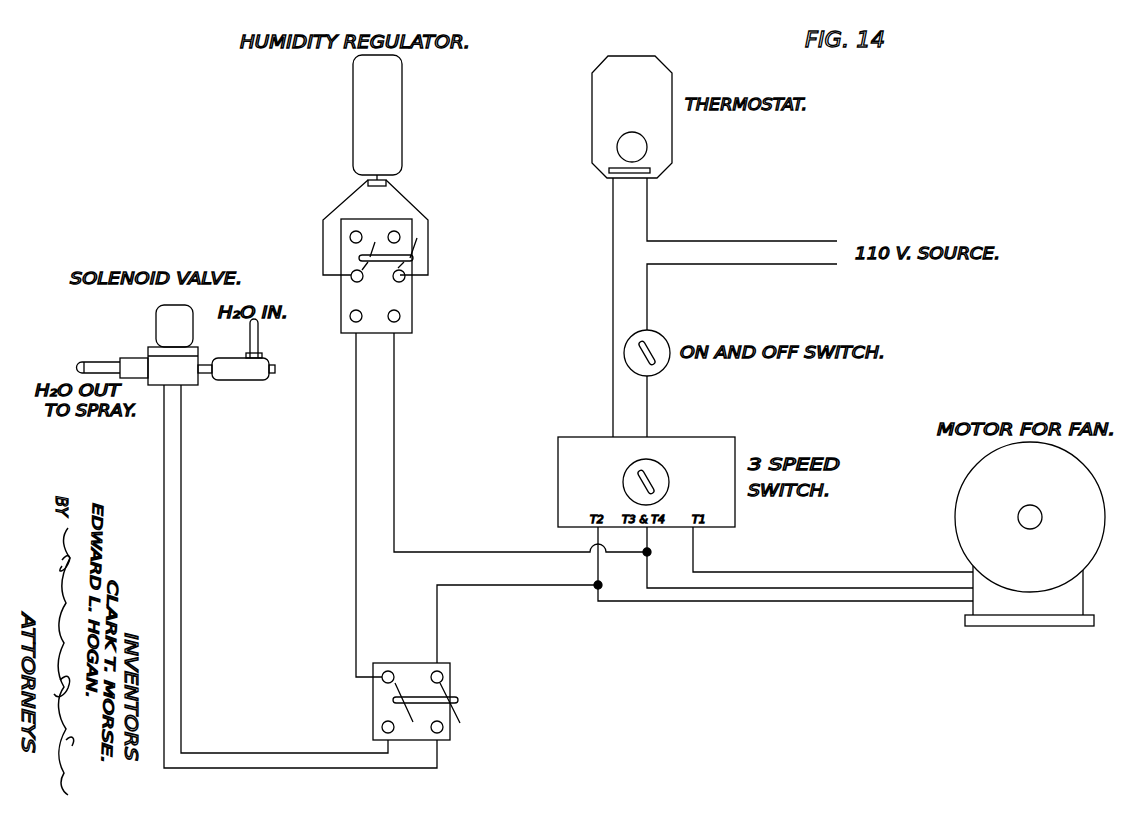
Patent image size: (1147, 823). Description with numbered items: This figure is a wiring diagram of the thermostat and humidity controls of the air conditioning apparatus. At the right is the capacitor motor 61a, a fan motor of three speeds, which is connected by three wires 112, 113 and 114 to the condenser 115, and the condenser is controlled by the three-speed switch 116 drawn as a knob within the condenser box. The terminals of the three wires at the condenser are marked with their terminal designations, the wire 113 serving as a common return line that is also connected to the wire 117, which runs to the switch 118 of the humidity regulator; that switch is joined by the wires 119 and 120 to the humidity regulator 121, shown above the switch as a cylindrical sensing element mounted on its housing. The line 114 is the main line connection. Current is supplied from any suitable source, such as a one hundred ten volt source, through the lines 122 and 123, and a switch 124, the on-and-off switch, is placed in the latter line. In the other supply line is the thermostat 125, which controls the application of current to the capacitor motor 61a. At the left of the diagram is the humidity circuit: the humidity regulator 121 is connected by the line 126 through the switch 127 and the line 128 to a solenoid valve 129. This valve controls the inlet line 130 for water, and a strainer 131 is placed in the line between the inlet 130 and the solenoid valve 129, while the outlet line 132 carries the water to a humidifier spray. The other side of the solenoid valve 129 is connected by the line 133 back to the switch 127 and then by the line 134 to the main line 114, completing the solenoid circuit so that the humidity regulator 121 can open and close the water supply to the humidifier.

The humidity regulator 121 is at (398, 90).
The wire 120 is at (324, 224).
The wire 119 is at (429, 226).
The switch 118 is at (414, 318).
The thermostat 125 is at (672, 131).
The line 122 is at (735, 228).
The line 123 is at (752, 264).
The switch 124 is at (652, 336).
The condenser 115 is at (585, 421).
The three-speed switch 116 is at (638, 468).
The wire 117 is at (474, 552).
The wire 112 is at (782, 556).
The wire 113 is at (745, 598).
The line 114 is at (832, 607).
The line 134 is at (496, 586).
The line 126 is at (356, 562).
The capacitor motor 61a is at (970, 482).
The solenoid valve 129 is at (158, 323).
The outlet line 132 is at (89, 360).
The strainer 131 is at (252, 378).
The inlet line 130 is at (260, 342).
The line 133 is at (163, 492).
The line 128 is at (183, 503).
The switch 127 is at (373, 707).